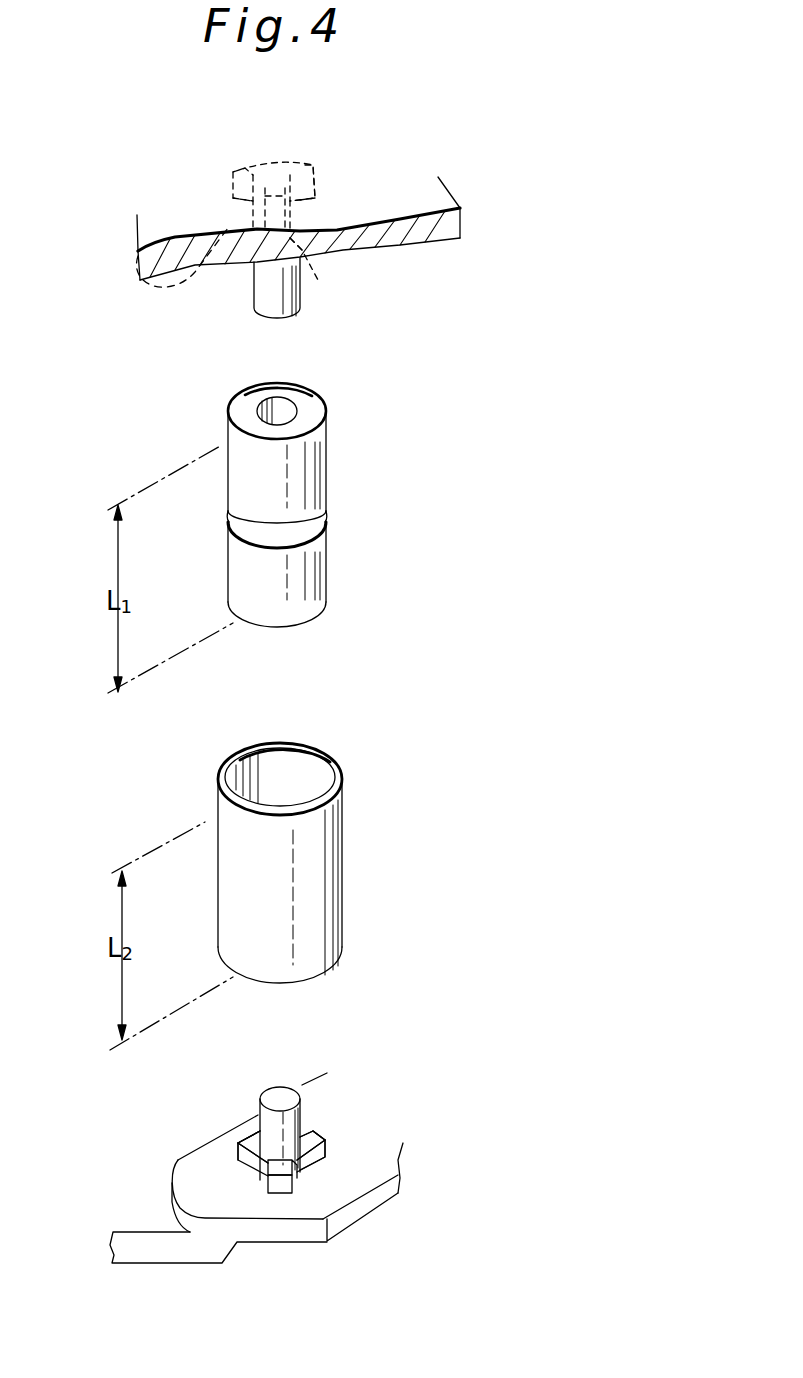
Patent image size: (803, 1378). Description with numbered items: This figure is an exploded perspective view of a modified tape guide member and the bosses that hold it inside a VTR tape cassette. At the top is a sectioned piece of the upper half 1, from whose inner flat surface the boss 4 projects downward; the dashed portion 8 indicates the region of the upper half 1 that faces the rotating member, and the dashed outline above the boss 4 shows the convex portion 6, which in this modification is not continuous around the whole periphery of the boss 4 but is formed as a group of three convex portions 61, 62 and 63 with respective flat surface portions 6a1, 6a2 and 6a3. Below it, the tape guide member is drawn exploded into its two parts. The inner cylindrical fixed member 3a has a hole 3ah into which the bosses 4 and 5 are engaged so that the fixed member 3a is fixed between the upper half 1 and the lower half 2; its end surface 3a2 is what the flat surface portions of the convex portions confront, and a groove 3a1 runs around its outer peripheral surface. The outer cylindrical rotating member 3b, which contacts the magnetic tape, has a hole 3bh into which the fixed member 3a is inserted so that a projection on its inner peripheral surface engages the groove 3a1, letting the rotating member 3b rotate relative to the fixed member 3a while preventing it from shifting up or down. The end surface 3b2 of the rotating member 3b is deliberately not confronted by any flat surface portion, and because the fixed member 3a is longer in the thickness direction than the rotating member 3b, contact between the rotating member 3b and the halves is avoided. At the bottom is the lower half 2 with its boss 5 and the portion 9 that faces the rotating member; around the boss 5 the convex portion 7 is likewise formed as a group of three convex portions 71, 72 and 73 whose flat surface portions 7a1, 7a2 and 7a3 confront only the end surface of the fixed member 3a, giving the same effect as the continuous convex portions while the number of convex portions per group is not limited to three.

The upper half 1 is at (190, 207).
The concave portion 8 is at (135, 287).
The boss 4 is at (268, 280).
The convex portion 6 is at (274, 195).
The convex portion 61 is at (323, 180).
The convex portion 62 is at (242, 162).
The convex portion 63 is at (338, 240).
The flat surface portion 6a1 is at (323, 205).
The flat surface portion 6a2 is at (227, 180).
The flat surface portion 6a3 is at (307, 257).
The inner cylindrical fixed member 3a is at (312, 478).
The hole of fixed member 3ah is at (282, 412).
The end surface of fixed member 3a2 is at (310, 412).
The groove 3a1 is at (307, 530).
The outer cylindrical rotating member 3b is at (327, 867).
The hole of rotating member 3bh is at (305, 770).
The end surface of rotating member 3b2 is at (337, 770).
The lower half 2 is at (203, 1167).
The concave portion 9 is at (252, 1205).
The boss 5 is at (283, 1092).
The convex portion 7 is at (281, 1153).
The convex portion 71 is at (320, 1168).
The convex portion 72 is at (237, 1150).
The convex portion 73 is at (282, 1187).
The flat surface portion 7a1 is at (320, 1138).
The flat surface portion 7a2 is at (255, 1130).
The flat surface portion 7a3 is at (297, 1177).